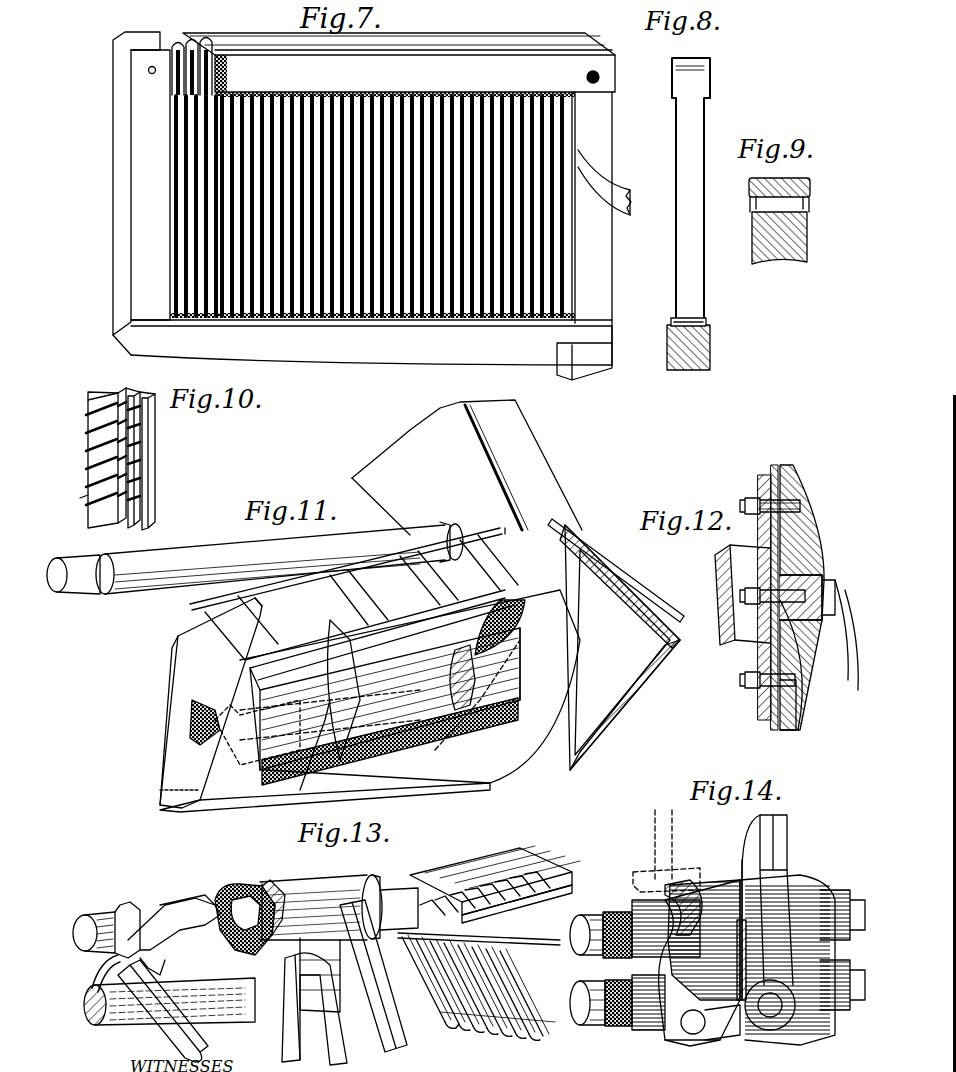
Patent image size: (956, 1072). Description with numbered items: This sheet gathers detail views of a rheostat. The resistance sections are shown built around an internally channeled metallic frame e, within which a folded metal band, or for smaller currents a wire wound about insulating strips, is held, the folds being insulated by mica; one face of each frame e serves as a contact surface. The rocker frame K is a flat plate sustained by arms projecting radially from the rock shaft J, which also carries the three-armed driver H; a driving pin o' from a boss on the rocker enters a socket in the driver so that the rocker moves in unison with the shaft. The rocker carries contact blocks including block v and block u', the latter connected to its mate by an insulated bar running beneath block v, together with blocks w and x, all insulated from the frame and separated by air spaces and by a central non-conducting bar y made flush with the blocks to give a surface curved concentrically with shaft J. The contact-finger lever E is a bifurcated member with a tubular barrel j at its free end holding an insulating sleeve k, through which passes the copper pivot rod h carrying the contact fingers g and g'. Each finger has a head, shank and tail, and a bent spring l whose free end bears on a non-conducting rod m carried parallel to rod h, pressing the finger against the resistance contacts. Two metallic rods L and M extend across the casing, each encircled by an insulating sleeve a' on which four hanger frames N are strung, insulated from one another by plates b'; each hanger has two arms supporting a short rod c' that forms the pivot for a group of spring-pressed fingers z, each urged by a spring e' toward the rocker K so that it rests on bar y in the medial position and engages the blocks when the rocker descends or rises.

In FIG. 7, the metallic frame e is at (372, 206).
In FIG. 8, the metallic frame e is at (696, 214).
In FIG. 9, the metallic frame e is at (779, 234).
In FIG. 11, the rock shaft J is at (255, 558).
In FIG. 11, the driver H is at (467, 467).
In FIG. 11, the driving pin O' is at (616, 570).
In FIG. 11, the rocker frame K is at (211, 703).
In FIG. 12, the rocker frame K is at (730, 595).
In FIG. 11, the non-conducting bar y is at (210, 720).
In FIG. 12, the non-conducting bar y is at (822, 575).
In FIG. 11, the contact block w is at (257, 734).
In FIG. 11, the contact block v is at (330, 690).
In FIG. 12, the contact block v is at (794, 597).
In FIG. 11, the contact block u' is at (487, 655).
In FIG. 11, the contact block x is at (474, 708).
In FIG. 12, the contact block x is at (803, 665).
In FIG. 13, the conducting pivot rod h is at (85, 930).
In FIG. 13, the contact finger g' is at (167, 921).
In FIG. 13, the non-conducting rod m is at (85, 1020).
In FIG. 13, the spring l is at (170, 1030).
In FIG. 13, the lever E is at (314, 1009).
In FIG. 13, the sleeve or lining k is at (248, 890).
In FIG. 13, the tubular barrel j is at (339, 963).
In FIG. 13, the contact finger g is at (495, 877).
In FIG. 14, the metallic rod L is at (627, 928).
In FIG. 14, the insulating sleeve a' is at (650, 965).
In FIG. 14, the metallic rod M is at (582, 1008).
In FIG. 14, the hanger frame N is at (699, 963).
In FIG. 14, the spring e' is at (729, 919).
In FIG. 14, the spring-pressed finger z is at (772, 922).
In FIG. 14, the insulating plate b' is at (802, 958).
In FIG. 14, the short rod c' is at (697, 1022).